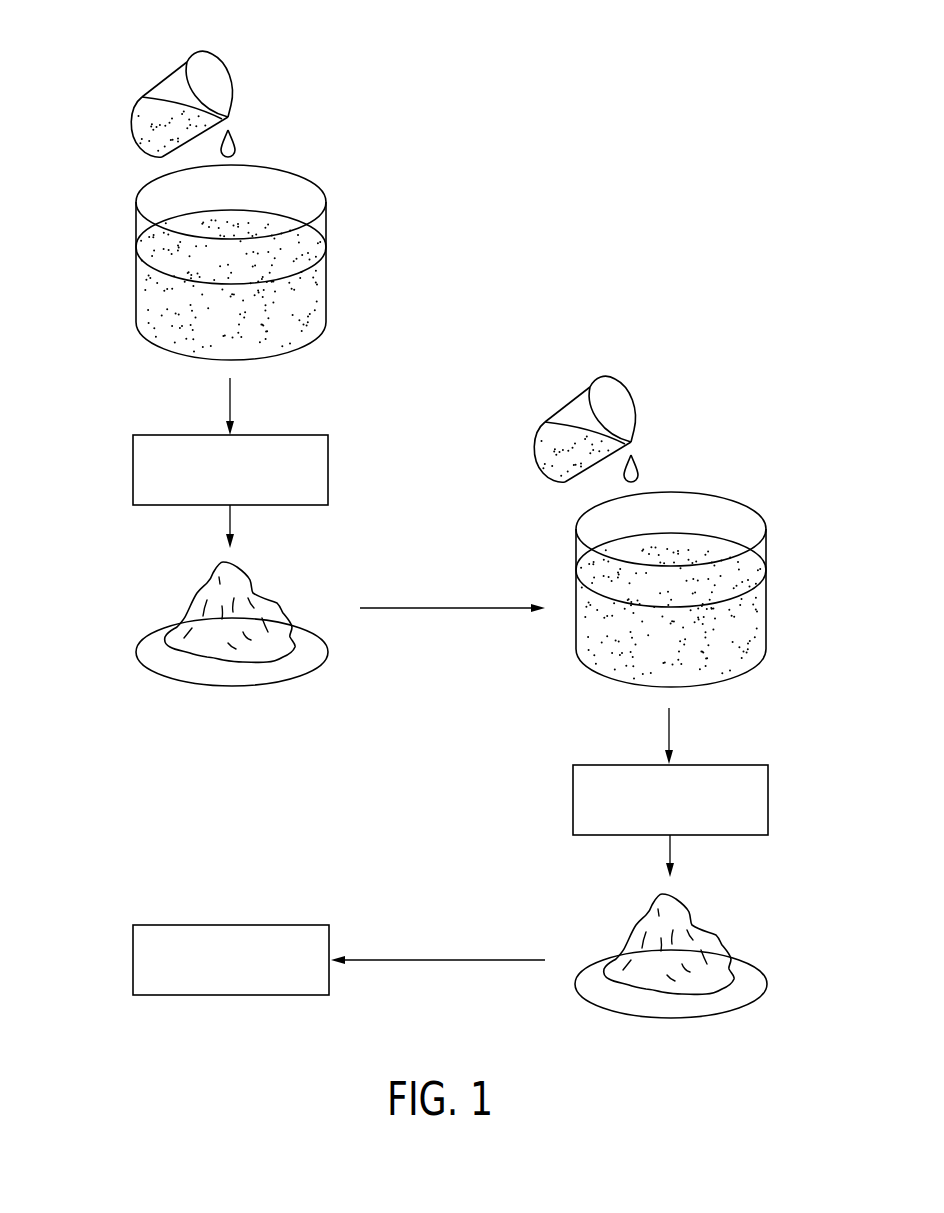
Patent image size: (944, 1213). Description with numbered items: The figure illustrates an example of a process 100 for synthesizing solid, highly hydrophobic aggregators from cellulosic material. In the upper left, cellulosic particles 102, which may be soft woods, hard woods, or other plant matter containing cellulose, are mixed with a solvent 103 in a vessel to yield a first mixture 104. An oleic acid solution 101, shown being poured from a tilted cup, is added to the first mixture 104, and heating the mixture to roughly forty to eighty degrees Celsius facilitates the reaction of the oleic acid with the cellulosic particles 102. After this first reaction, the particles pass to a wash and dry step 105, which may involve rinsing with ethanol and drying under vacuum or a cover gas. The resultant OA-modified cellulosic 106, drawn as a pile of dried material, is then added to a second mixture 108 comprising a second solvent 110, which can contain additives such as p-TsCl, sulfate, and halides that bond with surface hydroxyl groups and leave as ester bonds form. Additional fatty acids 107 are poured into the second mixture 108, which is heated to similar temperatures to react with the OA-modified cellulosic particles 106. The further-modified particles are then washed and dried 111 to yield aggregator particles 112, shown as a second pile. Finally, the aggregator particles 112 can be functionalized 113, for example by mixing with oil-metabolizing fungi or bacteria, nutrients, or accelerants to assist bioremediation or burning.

The process 100 is at (665, 145).
The oleic acid solution 101 is at (170, 103).
The cellulosic particles 102 is at (317, 305).
The solvent 103 is at (298, 245).
The first mixture 104 is at (312, 182).
The wash and dry step 105 is at (328, 470).
The OA-modified cellulosic 106 is at (260, 602).
The additional fatty acids 107 is at (577, 423).
The second mixture 108 is at (750, 515).
The second solvent 110 is at (745, 663).
The wash and dry step 111 is at (768, 800).
The aggregator particles 112 is at (700, 932).
The functionalize step 113 is at (133, 958).